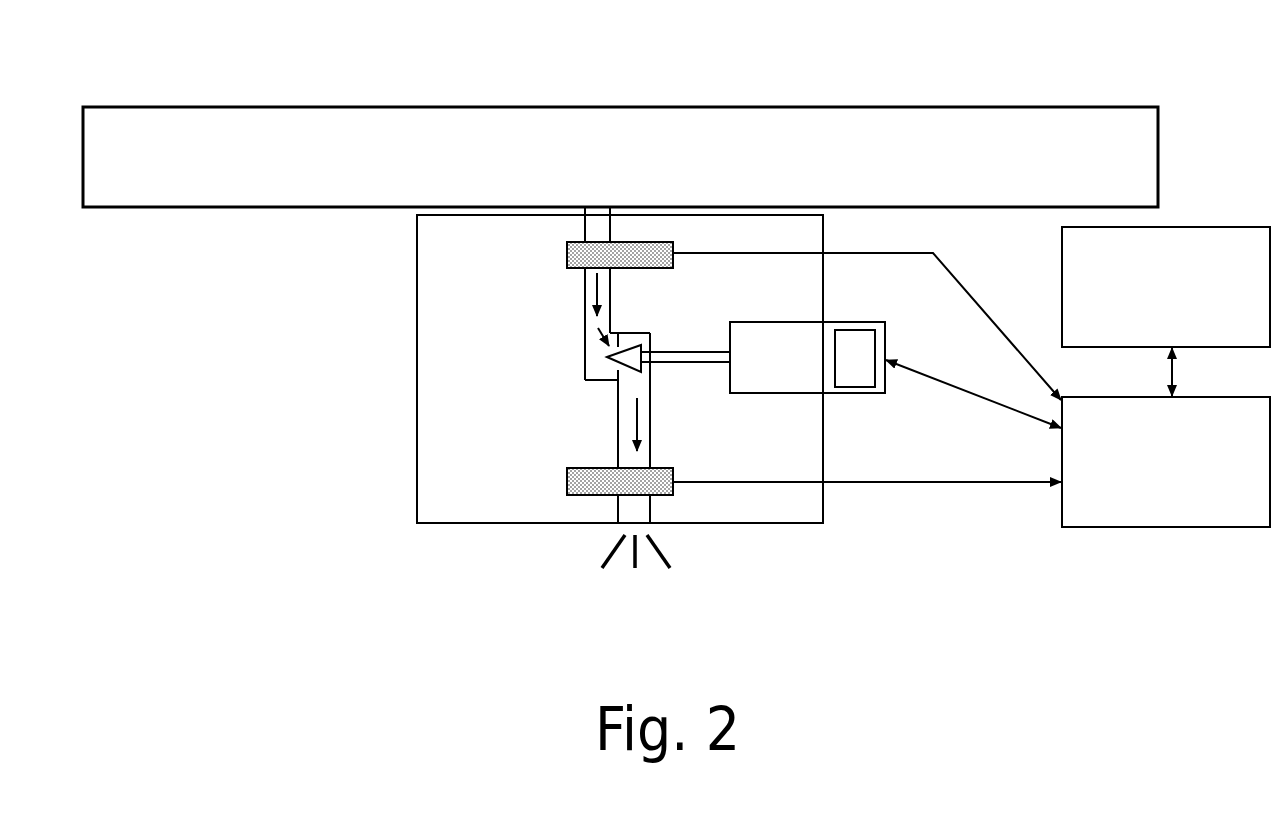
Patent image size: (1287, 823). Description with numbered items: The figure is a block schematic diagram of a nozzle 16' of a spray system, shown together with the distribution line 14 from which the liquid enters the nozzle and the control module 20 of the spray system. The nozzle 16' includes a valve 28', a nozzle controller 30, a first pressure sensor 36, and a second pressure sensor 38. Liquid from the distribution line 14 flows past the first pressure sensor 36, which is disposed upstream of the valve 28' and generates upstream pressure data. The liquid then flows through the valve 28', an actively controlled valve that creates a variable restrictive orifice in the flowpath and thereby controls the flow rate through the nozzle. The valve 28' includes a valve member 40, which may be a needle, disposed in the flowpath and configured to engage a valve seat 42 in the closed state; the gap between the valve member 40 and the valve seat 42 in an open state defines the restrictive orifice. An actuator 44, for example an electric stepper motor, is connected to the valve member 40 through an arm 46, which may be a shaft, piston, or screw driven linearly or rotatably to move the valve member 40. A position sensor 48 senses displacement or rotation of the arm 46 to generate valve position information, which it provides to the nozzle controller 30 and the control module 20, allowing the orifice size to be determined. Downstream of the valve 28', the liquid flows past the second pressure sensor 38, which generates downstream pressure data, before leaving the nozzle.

The distribution line 14 is at (662, 135).
The nozzle 16' is at (533, 396).
The control module 20 is at (1062, 252).
The valve 28' is at (685, 401).
The nozzle controller 30 is at (1142, 527).
The first pressure sensor 36 is at (567, 253).
The second pressure sensor 38 is at (567, 481).
The valve member 40 is at (628, 350).
The valve seat 42 is at (616, 375).
The actuator 44 is at (770, 378).
The arm 46 is at (688, 352).
The position sensor 48 is at (854, 357).